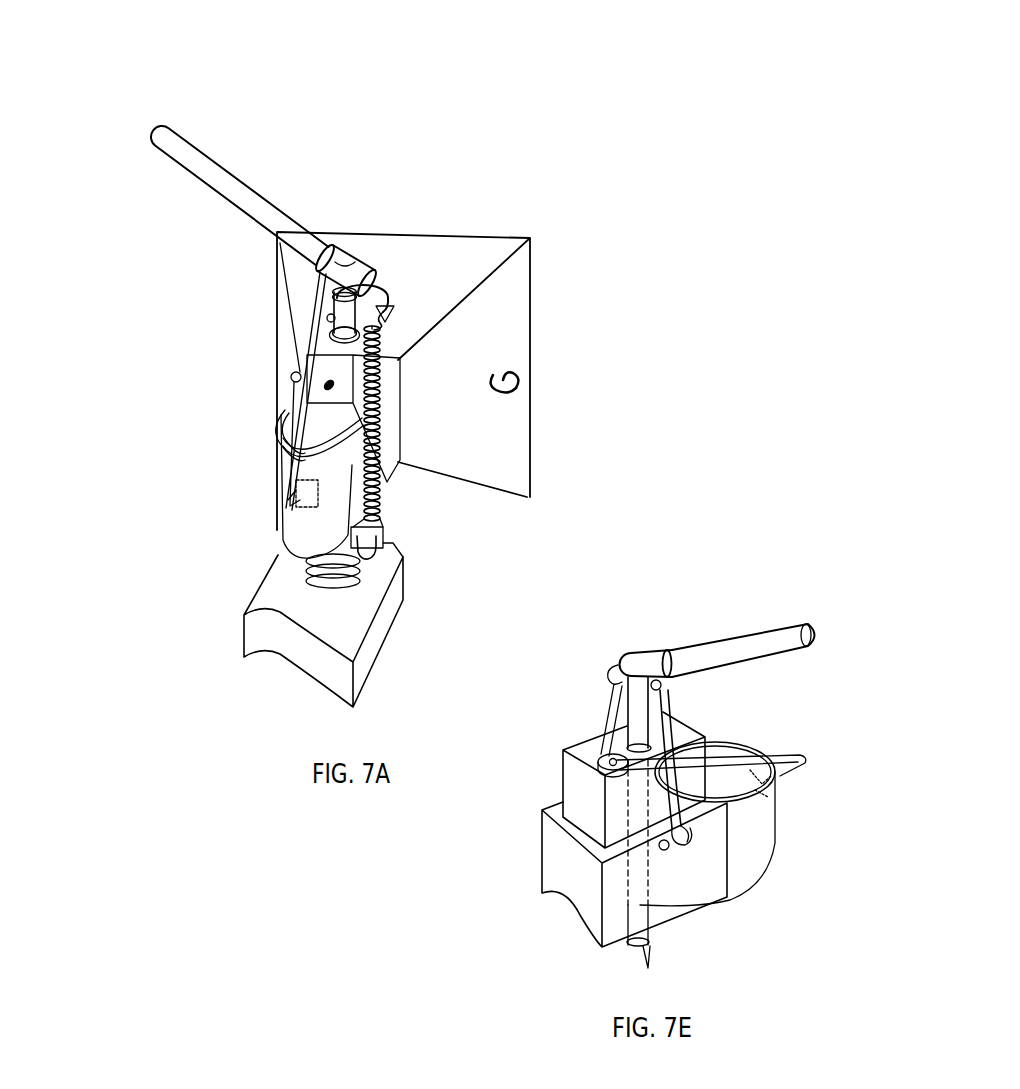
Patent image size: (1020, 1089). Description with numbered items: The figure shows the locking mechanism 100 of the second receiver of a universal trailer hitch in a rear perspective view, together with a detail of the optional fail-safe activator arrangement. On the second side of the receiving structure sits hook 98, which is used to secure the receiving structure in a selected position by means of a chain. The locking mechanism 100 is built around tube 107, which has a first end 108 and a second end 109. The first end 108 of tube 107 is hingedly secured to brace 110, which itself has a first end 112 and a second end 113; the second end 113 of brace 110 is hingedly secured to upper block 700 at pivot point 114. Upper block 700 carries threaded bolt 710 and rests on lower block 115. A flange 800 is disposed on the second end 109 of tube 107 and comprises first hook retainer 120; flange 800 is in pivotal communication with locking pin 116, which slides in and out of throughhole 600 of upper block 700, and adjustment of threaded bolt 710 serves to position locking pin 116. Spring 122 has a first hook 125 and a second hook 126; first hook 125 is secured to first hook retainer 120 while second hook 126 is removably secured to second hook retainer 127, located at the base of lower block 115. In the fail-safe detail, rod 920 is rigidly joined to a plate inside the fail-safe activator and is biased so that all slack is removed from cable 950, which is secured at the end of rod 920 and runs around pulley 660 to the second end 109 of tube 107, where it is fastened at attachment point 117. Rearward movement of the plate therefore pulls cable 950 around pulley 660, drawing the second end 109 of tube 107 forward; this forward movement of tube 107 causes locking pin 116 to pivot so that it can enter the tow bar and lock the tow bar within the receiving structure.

In FIG. 7A, the locking mechanism 100 is at (301, 85).
In FIG. 7A, the hook 98 is at (505, 402).
In FIG. 7A, the tube 107 is at (358, 272).
In FIG. 7E, the tube 107 is at (648, 658).
In FIG. 7A, the first end 108 is at (343, 263).
In FIG. 7A, the second end 109 is at (383, 274).
In FIG. 7E, the second end 109 is at (628, 653).
In FIG. 7A, the brace 110 is at (336, 333).
In FIG. 7A, the first end 112 is at (317, 347).
In FIG. 7A, the second end 113 is at (305, 362).
In FIG. 7A, the pivot point 114 is at (323, 387).
In FIG. 7A, the lower block 115 is at (384, 405).
In FIG. 7A, the locking pin 116 is at (336, 300).
In FIG. 7E, the locking pin 116 is at (650, 712).
In FIG. 7E, the attachment point 117 is at (612, 672).
In FIG. 7A, the first hook retainer 120 is at (390, 333).
In FIG. 7A, the spring 122 is at (390, 404).
In FIG. 7A, the first hook 125 is at (388, 293).
In FIG. 7A, the second hook 126 is at (363, 549).
In FIG. 7A, the second hook retainer 127 is at (373, 548).
In FIG. 7A, the throughhole 600 is at (287, 403).
In FIG. 7E, the pulley 660 is at (598, 760).
In FIG. 7A, the upper block 700 is at (322, 316).
In FIG. 7E, the upper block 700 is at (690, 790).
In FIG. 7A, the threaded bolt 710 is at (512, 393).
In FIG. 7A, the flange 800 is at (386, 297).
In FIG. 7A, the rod 920 is at (277, 507).
In FIG. 7A, the cable 950 is at (283, 430).
In FIG. 7E, the cable 950 is at (760, 740).